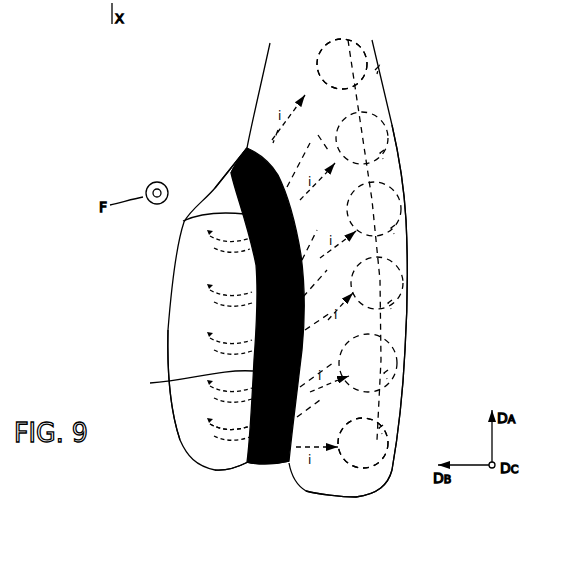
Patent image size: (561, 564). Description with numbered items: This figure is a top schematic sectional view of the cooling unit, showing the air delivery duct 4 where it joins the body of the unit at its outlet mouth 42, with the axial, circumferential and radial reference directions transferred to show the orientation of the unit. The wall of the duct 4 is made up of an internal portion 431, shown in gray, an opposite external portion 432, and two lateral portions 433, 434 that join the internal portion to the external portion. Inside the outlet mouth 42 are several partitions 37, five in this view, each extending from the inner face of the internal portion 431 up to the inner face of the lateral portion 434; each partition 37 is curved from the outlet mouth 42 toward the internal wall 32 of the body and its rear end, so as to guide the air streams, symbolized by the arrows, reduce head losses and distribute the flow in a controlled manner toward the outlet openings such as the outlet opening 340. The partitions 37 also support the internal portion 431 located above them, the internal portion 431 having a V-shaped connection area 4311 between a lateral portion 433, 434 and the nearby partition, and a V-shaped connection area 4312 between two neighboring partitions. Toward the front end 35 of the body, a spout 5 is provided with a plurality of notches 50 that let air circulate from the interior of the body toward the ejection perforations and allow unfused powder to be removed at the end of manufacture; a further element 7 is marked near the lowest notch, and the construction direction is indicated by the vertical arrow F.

The air delivery duct 4 is at (188, 457).
The spout 5 is at (376, 419).
The cooling cavity 7 is at (363, 451).
The internal wall 32 is at (410, 189).
The front end 35 is at (369, 497).
The partition 37 is at (183, 221).
The outlet mouth 42 is at (194, 330).
The notches 50 is at (383, 113).
The outlet opening 340 is at (333, 43).
The internal portion 431 is at (245, 311).
The external portion 432 is at (170, 350).
The lateral portion 433 is at (238, 470).
The lateral portion 434 is at (217, 184).
The V-shaped connection area 4311 is at (241, 160).
The V-shaped connection area 4312 is at (253, 371).